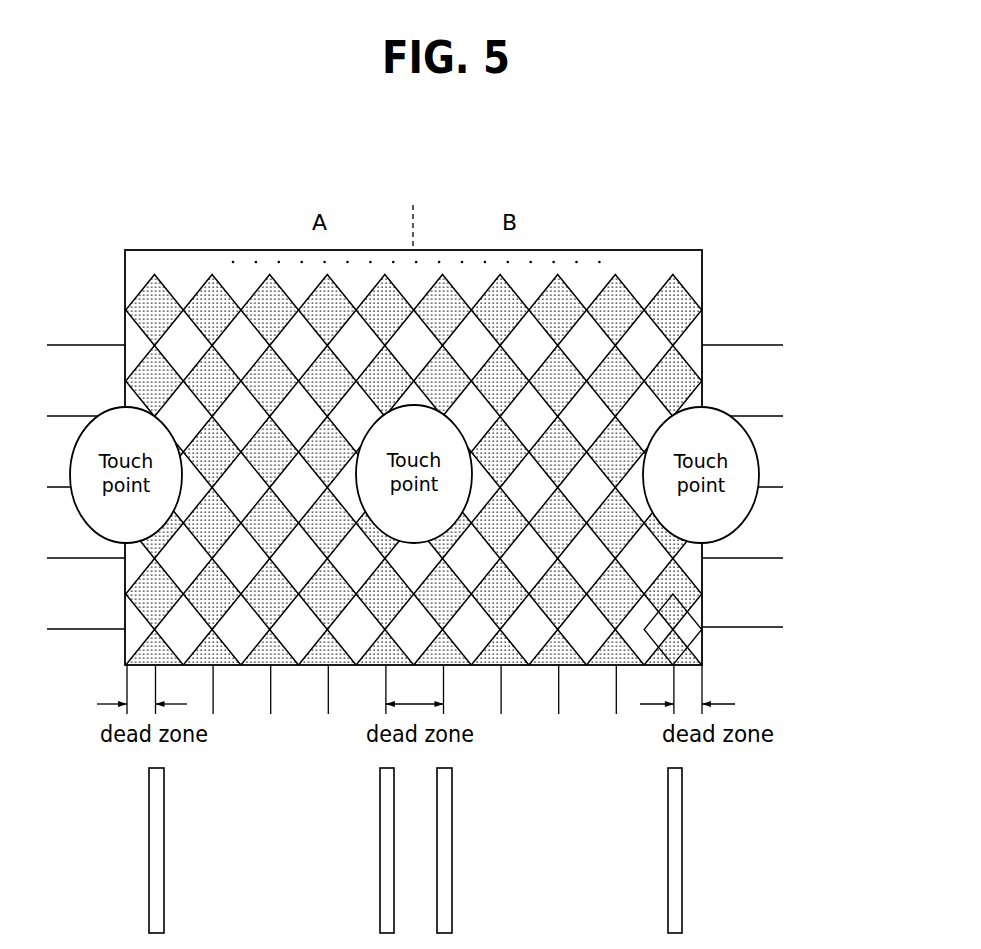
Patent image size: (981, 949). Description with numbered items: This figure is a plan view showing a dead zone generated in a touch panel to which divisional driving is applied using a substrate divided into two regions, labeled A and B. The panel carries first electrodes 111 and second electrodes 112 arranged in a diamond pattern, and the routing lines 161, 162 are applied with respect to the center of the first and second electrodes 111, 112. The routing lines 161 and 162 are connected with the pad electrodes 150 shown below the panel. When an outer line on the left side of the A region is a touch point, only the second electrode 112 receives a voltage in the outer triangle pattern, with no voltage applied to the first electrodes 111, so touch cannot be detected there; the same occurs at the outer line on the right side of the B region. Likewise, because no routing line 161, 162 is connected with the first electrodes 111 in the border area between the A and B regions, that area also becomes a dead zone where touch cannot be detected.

The first electrode 111 is at (690, 581).
The second electrode 112 is at (655, 637).
The pad electrode 150 is at (153, 857).
The routing line 161 is at (672, 707).
The routing line 162 is at (777, 627).